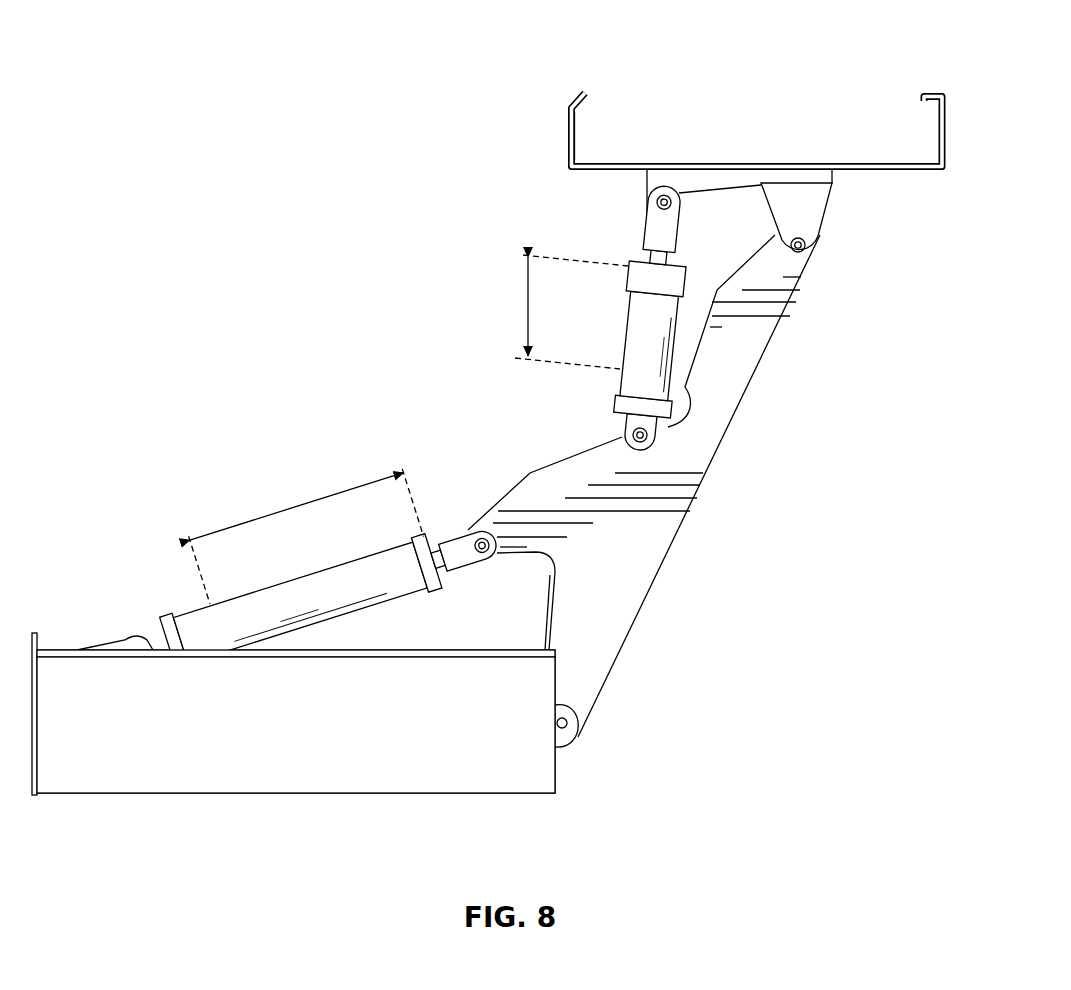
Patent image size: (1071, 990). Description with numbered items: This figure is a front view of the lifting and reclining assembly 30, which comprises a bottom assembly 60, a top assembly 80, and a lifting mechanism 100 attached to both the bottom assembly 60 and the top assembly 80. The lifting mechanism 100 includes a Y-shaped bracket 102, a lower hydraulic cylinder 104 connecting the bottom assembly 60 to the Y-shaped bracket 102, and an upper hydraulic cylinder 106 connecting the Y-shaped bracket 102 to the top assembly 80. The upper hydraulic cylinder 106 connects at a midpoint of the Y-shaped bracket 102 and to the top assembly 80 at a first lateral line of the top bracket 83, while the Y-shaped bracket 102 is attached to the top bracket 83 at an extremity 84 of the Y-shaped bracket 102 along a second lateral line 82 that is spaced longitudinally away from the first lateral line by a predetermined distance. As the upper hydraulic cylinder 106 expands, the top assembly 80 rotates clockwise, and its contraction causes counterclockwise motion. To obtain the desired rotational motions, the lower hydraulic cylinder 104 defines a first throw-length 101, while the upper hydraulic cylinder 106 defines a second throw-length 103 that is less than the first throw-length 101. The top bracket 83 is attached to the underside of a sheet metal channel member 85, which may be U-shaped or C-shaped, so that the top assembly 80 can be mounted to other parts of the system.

The lifting and reclining assembly 30 is at (497, 88).
The bottom assembly 60 is at (465, 800).
The top assembly 80 is at (868, 138).
The second lateral line 82 is at (805, 248).
The top bracket 83 is at (748, 193).
The extremity 84 is at (775, 318).
The sheet metal channel member 85 is at (578, 143).
The lifting mechanism 100 is at (669, 465).
The first throw-length 101 is at (317, 502).
The Y-shaped bracket 102 is at (613, 648).
The second throw-length 103 is at (523, 303).
The lower hydraulic cylinder 104 is at (276, 588).
The upper hydraulic cylinder 106 is at (613, 317).